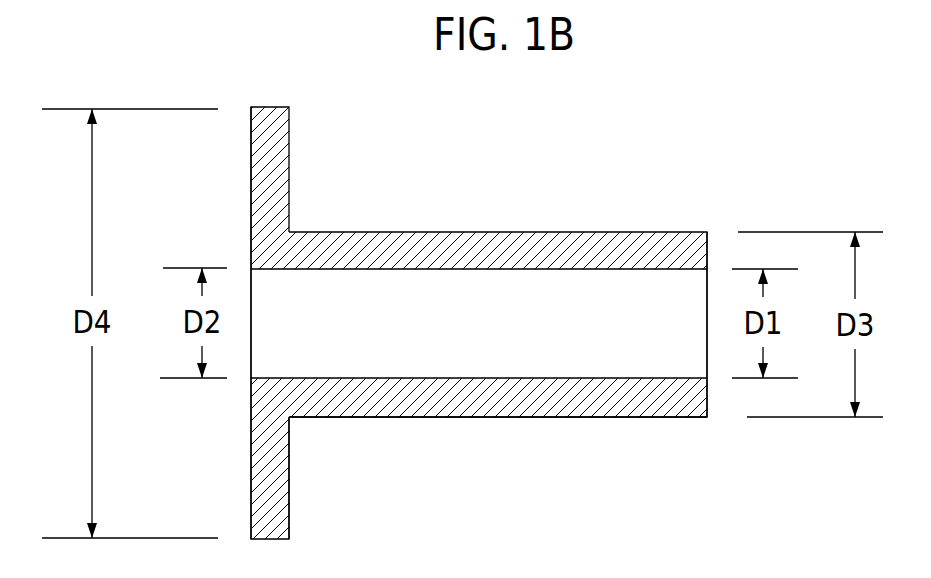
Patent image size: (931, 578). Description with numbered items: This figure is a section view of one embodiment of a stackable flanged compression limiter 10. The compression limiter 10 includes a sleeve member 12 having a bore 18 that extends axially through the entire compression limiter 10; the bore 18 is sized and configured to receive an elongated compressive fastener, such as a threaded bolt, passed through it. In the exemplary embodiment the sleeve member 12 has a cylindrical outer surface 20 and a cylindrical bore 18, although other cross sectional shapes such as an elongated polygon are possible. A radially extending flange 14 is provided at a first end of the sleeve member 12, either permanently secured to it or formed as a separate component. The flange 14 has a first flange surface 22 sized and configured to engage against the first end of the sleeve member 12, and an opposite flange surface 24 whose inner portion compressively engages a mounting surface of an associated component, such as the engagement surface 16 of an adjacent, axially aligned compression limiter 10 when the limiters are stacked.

The stackable flanged compression limiter 10 is at (612, 149).
The sleeve member 12 is at (488, 417).
The radially extending flange 14 is at (267, 107).
The engagement surface 16 is at (709, 240).
The bore 18 is at (538, 337).
The cylindrical outer surface 20 is at (605, 413).
The first flange surface 22 is at (290, 502).
The flange surface 24 is at (251, 492).